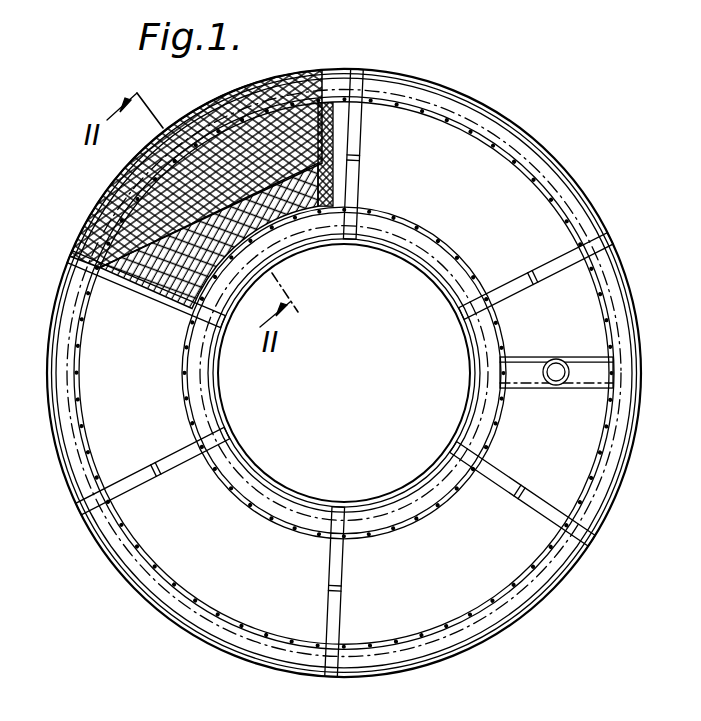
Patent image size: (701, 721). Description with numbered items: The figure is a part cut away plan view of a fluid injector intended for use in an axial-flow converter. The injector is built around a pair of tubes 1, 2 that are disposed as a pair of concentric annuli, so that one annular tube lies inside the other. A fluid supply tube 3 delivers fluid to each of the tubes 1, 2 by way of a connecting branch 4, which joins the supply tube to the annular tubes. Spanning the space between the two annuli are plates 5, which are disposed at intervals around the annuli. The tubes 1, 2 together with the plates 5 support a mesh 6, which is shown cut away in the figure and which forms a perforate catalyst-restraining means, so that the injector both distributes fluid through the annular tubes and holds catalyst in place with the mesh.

The tube 1 is at (565, 192).
The tube 2 is at (468, 282).
The fluid supply tube 3 is at (560, 358).
The connecting branch 4 is at (520, 383).
The plate 5 is at (530, 273).
The mesh 6 is at (113, 182).